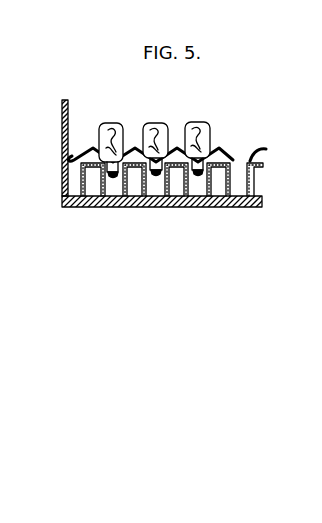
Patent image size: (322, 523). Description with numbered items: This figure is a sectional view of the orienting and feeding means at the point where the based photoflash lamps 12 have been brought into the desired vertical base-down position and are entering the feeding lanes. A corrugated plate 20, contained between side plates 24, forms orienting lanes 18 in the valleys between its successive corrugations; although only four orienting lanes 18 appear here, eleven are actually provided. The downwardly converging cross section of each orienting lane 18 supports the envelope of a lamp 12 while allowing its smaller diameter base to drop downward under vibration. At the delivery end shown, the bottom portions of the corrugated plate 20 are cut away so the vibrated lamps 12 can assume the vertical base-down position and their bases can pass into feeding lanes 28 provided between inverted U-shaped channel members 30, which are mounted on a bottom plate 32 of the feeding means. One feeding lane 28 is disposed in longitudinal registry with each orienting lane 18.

The based photoflash lamp 12 is at (187, 123).
The orienting lane 18 is at (84, 161).
The corrugated plate 20 is at (63, 157).
The side plate 24 is at (62, 112).
The feeding lane 28 is at (197, 187).
The inverted U-shaped channel member 30 is at (247, 158).
The bottom plate 32 is at (103, 192).